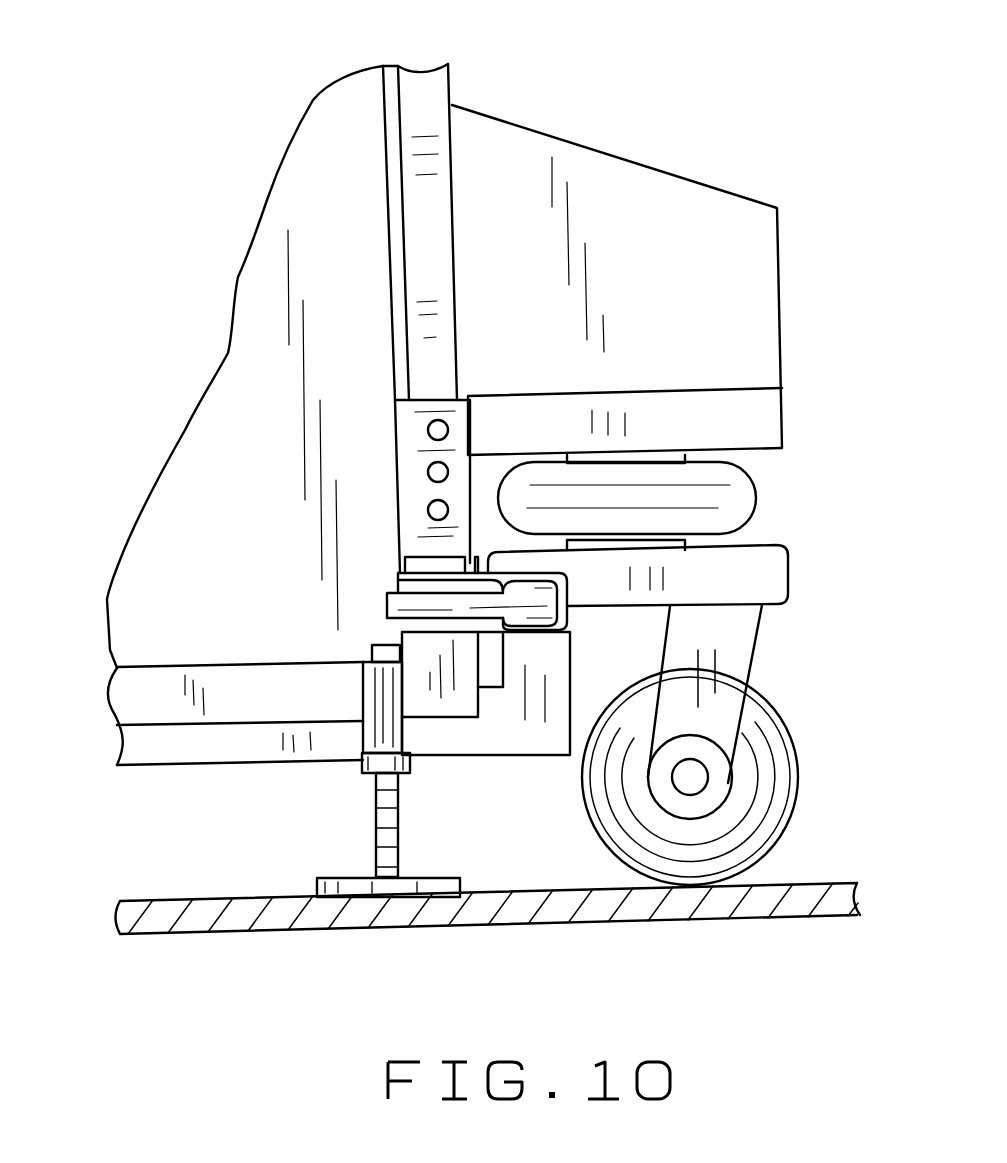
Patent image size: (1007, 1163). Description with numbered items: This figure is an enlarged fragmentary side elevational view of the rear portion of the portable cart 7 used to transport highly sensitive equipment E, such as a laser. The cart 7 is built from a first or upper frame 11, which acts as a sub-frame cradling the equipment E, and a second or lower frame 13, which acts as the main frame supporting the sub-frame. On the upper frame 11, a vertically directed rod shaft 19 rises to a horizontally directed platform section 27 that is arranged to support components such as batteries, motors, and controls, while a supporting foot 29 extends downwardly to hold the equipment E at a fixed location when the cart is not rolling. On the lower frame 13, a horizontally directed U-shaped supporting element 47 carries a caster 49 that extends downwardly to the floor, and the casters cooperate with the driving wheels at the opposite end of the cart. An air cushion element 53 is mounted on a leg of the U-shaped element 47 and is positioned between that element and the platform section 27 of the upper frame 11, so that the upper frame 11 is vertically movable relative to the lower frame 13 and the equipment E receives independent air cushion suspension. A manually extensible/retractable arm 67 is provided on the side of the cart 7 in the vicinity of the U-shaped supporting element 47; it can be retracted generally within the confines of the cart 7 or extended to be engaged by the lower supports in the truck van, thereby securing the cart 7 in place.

The highly sensitive equipment E is at (300, 295).
The portable cart 7 is at (559, 94).
The first or upper frame 11 is at (152, 696).
The second or lower frame 13 is at (506, 735).
The vertically directed rod shaft 19 is at (457, 452).
The platform section 27 is at (760, 422).
The supporting foot 29 is at (377, 830).
The U-shaped supporting element 47 is at (750, 577).
The caster 49 is at (760, 792).
The air cushion element 53 is at (725, 501).
The manually extensible/retractable arm 67 is at (533, 600).